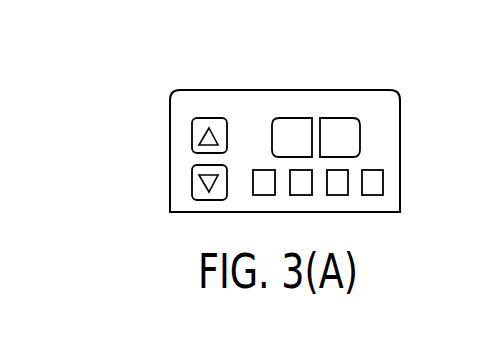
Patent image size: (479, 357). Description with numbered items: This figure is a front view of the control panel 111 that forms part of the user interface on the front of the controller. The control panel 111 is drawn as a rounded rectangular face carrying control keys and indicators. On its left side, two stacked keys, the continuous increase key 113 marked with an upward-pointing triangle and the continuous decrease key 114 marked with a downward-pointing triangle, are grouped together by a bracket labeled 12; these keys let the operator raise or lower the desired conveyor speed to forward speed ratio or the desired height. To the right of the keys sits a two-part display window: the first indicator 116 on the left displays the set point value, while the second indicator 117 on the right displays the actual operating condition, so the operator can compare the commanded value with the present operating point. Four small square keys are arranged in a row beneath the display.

The operation unit 12 is at (92, 63).
The control panel 111 is at (195, 90).
The continuous increase key 113 is at (193, 133).
The continuous decrease key 114 is at (193, 178).
The first indicator 116 is at (295, 138).
The second indicator 117 is at (343, 137).